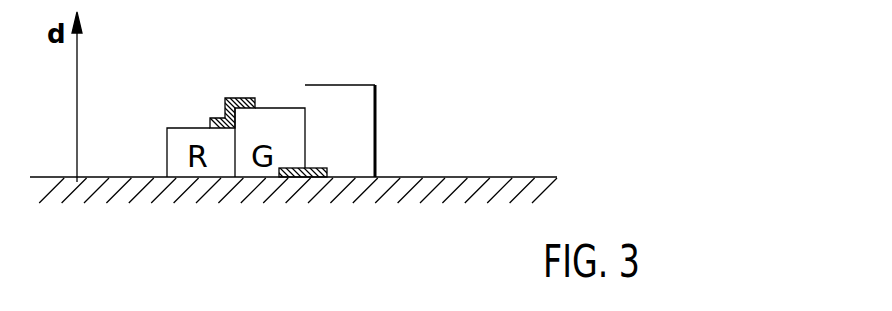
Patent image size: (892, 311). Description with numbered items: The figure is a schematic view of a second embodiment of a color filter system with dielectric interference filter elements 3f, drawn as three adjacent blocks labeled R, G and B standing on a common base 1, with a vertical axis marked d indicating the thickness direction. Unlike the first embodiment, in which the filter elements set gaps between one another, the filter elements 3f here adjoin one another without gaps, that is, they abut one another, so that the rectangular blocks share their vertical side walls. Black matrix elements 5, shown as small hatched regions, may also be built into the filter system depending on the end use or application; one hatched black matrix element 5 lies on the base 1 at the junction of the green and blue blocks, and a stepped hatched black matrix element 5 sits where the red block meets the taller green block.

The substrate 1 is at (494, 246).
The dielectric interference filter element 3f is at (352, 85).
The black matrix element 5 is at (291, 168).